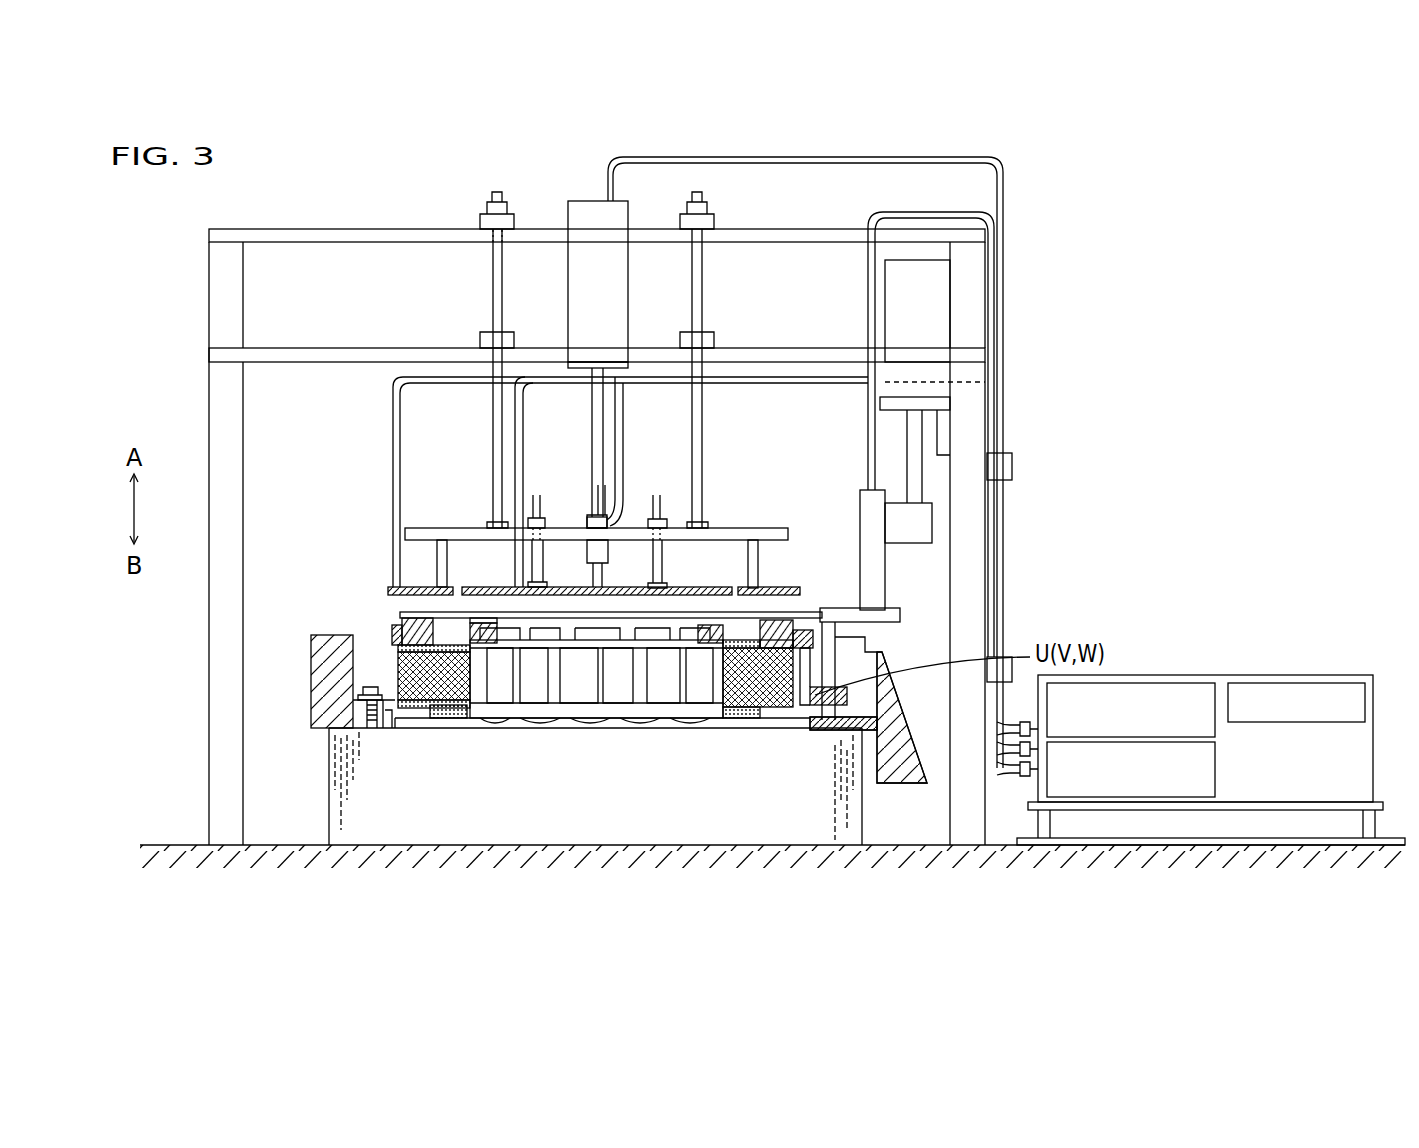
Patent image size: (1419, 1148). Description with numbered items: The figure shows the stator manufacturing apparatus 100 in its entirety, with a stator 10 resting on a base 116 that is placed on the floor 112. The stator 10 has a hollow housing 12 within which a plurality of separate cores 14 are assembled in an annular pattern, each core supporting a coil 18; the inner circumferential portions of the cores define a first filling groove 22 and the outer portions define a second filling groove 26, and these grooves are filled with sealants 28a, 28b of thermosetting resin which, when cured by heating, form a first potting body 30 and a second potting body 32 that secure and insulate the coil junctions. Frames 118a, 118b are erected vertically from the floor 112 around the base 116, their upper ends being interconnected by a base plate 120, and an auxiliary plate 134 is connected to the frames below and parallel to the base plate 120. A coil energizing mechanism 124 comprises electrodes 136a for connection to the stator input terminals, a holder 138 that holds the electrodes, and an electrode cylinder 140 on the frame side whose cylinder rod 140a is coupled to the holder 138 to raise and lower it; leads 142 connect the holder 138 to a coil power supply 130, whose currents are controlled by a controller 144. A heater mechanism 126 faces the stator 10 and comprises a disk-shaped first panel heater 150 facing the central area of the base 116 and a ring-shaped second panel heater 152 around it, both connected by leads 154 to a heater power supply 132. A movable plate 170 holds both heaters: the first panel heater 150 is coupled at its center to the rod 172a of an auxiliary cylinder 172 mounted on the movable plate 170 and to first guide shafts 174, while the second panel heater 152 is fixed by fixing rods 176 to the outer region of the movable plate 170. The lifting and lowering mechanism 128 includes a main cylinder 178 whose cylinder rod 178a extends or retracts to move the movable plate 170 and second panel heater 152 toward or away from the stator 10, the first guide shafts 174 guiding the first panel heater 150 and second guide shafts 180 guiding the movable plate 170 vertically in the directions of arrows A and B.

The stator 10 is at (370, 585).
The housing 12 is at (822, 724).
The separate cores 14 is at (400, 732).
The coils 18 is at (455, 718).
The first filling groove 22 is at (496, 618).
The second filling groove 26 is at (395, 642).
The sealant 28a is at (486, 620).
The sealant 28b is at (402, 620).
The first potting body 30 is at (706, 624).
The second potting body 32 is at (790, 632).
The stator manufacturing apparatus 100 is at (1085, 190).
The floor 112 is at (636, 843).
The base 116 is at (362, 770).
The frame 118a is at (226, 795).
The frame 118b is at (955, 818).
The base plate 120 is at (359, 231).
The coil energizing mechanism 124 is at (905, 635).
The heater mechanism 126 is at (736, 520).
The lifting and lowering mechanism 128 is at (638, 318).
The coil power supply 130 is at (1185, 682).
The heater power supply 132 is at (1130, 798).
The auxiliary plate 134 is at (320, 360).
The electrode 136a is at (830, 668).
The holder 138 is at (880, 590).
The electrode cylinder 140 is at (935, 316).
The cylinder rod 140a is at (908, 455).
The leads 142 is at (1005, 262).
The controller 144 is at (1293, 682).
The first panel heater 150 is at (630, 598).
The second panel heater 152 is at (805, 590).
The leads 154 is at (445, 386).
The movable plate 170 is at (457, 527).
The auxiliary cylinder 172 is at (609, 552).
The rod 172a is at (597, 578).
The first guide shafts 174 is at (661, 556).
The fixing rods 176 is at (437, 560).
The main cylinder 178 is at (568, 296).
The cylinder rod 178a is at (592, 458).
The second guide shafts 180 is at (494, 302).